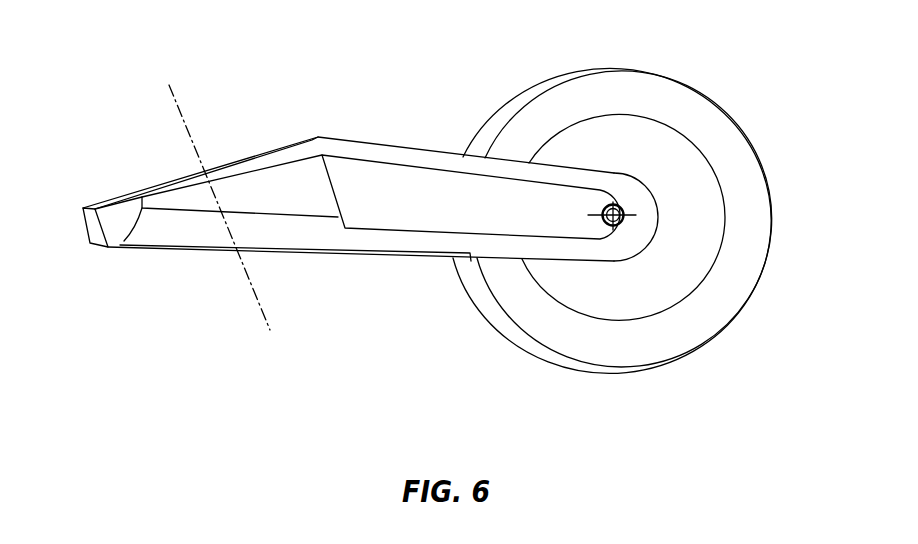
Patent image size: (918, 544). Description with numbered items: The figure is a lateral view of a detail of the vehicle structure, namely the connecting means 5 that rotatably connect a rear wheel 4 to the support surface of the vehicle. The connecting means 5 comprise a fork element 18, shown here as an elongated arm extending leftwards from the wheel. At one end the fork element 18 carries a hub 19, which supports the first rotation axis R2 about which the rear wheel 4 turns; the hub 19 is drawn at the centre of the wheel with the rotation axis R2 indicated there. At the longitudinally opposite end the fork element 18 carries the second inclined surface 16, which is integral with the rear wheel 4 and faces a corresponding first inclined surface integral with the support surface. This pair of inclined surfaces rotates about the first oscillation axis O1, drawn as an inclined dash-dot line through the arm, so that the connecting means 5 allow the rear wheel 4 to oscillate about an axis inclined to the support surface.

The rear wheel 4 is at (723, 104).
The connecting means 5 is at (427, 186).
The second inclined surface 16 is at (370, 204).
The fork element 18 is at (372, 142).
The hub 19 is at (617, 203).
The first rotation axis R2 is at (613, 215).
The first oscillation axis O1 is at (262, 312).